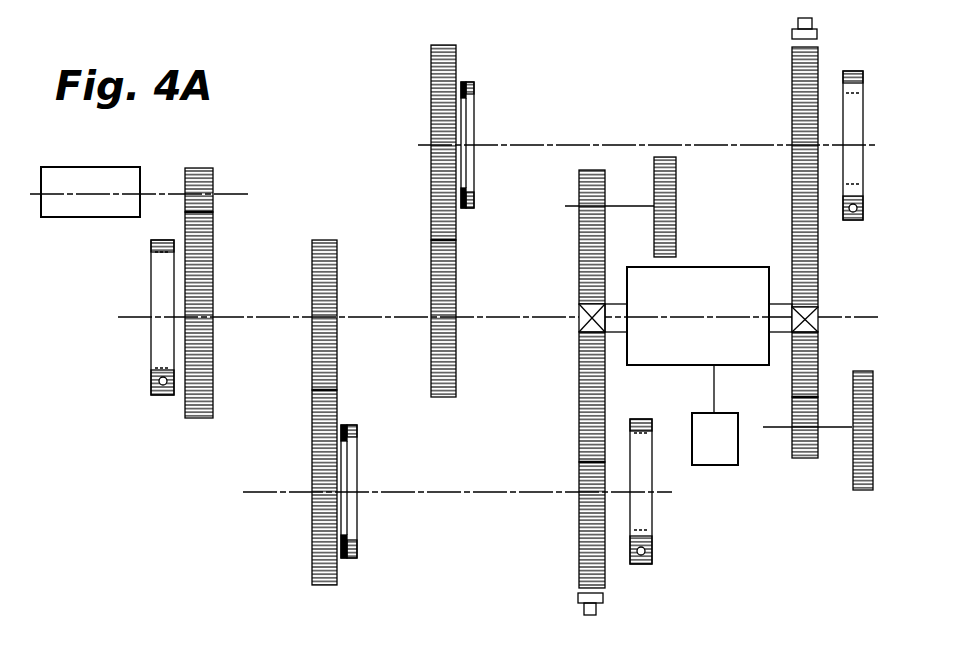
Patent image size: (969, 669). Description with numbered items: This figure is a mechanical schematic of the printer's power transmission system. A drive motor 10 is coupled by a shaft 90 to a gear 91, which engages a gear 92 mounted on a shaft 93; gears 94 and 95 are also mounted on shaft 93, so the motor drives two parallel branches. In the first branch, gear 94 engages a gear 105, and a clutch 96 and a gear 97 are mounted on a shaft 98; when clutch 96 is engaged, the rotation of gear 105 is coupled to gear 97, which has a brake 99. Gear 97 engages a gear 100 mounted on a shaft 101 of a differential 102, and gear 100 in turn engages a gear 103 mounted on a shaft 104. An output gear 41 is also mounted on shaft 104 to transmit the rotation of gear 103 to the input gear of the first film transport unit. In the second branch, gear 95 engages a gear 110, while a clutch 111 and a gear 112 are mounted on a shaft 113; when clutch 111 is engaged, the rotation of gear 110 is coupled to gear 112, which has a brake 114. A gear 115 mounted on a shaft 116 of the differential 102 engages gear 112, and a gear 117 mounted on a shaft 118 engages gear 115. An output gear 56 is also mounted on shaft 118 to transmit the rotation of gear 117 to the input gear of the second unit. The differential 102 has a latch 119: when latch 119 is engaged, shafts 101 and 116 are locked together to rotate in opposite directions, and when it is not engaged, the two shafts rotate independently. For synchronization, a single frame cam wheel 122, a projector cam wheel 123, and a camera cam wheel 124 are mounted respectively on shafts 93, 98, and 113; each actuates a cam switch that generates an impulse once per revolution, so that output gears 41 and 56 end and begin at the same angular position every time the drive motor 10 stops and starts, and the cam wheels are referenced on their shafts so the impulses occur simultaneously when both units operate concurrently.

The drive motor 10 is at (98, 167).
The shaft 90 is at (155, 190).
The gear 91 is at (213, 172).
The gear 92 is at (213, 283).
The shaft 93 is at (362, 319).
The gear 94 is at (337, 252).
The gear 95 is at (441, 398).
The clutch 96 is at (350, 558).
The gear 97 is at (579, 567).
The shaft 98 is at (452, 494).
The brake 99 is at (583, 606).
The gear 100 is at (579, 358).
The shaft 101 is at (612, 304).
The differential 102 is at (756, 267).
The gear 103 is at (579, 236).
The shaft 104 is at (628, 206).
The gear 105 is at (320, 586).
The gear 110 is at (454, 50).
The clutch 111 is at (474, 88).
The gear 112 is at (792, 110).
The shaft 113 is at (548, 145).
The brake 114 is at (817, 34).
The gear 115 is at (818, 362).
The shaft 116 is at (782, 304).
The gear 117 is at (806, 459).
The shaft 118 is at (768, 427).
The latch 119 is at (692, 418).
The single frame cam wheel 122 is at (165, 395).
The projector cam wheel 123 is at (642, 565).
The camera cam wheel 124 is at (853, 221).
The output gear 41 is at (676, 190).
The output gear 56 is at (855, 491).